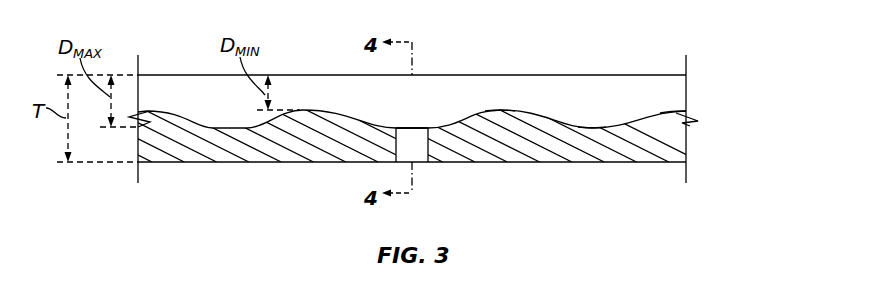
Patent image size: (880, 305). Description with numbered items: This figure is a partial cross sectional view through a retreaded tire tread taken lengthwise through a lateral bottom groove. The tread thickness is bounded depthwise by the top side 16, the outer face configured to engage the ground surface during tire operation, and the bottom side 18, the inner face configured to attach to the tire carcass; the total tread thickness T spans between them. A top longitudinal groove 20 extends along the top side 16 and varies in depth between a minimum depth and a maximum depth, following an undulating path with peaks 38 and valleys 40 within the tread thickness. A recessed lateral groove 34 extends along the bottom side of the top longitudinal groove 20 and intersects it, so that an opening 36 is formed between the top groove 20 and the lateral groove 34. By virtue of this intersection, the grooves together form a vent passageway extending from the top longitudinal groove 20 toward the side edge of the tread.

The top side 16 is at (183, 74).
The bottom side 18 is at (201, 164).
The top longitudinal groove 20 is at (562, 90).
The lateral groove 34 is at (418, 154).
The opening 36 is at (415, 127).
The peaks 38 is at (503, 109).
The valleys 40 is at (595, 126).